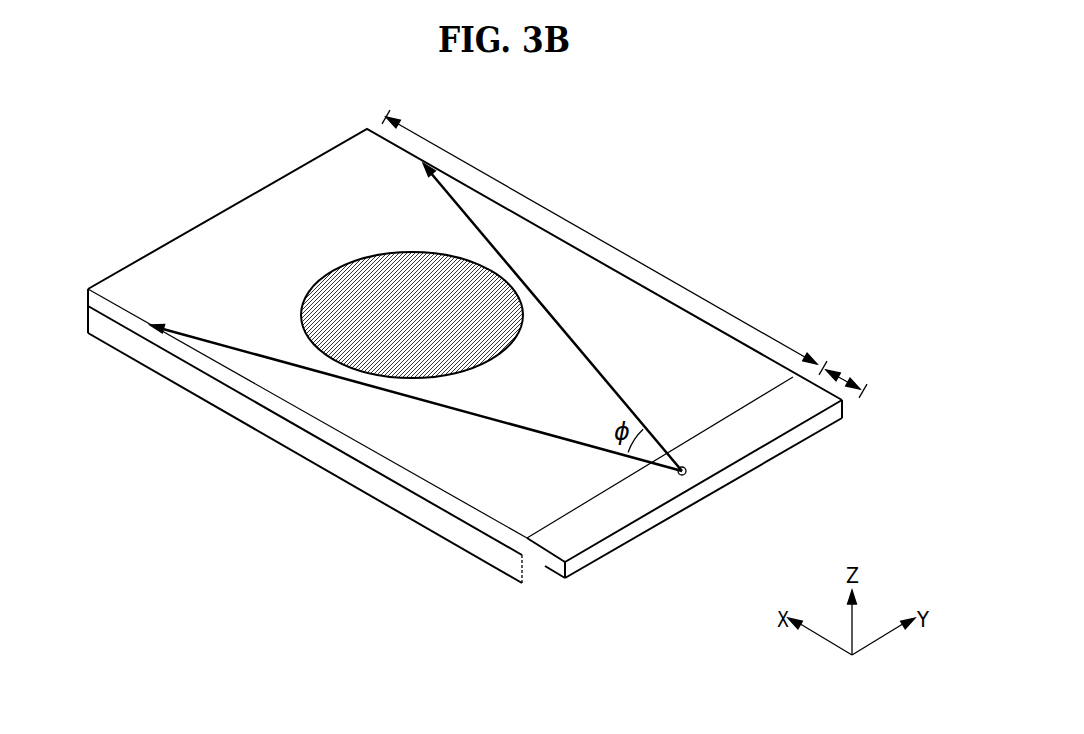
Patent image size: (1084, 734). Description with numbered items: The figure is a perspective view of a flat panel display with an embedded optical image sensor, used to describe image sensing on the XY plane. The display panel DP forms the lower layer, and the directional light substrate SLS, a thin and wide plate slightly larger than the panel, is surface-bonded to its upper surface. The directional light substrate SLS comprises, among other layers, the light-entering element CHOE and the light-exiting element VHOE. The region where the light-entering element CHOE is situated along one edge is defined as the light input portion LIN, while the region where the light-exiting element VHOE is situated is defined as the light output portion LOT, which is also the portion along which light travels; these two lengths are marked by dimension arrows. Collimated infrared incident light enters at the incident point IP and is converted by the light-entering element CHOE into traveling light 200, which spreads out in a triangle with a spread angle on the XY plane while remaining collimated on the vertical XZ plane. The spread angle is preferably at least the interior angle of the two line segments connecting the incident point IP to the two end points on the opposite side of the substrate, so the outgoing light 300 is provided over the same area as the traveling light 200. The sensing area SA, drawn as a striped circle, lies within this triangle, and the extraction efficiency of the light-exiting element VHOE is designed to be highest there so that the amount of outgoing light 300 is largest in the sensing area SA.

The sensing area SA is at (345, 270).
The light output portion LOT is at (604, 242).
The light input portion LIN is at (853, 375).
The display panel DP is at (198, 387).
The directional light substrate SLS is at (280, 407).
The light-exiting element VHOE is at (370, 435).
The light-entering element CHOE is at (587, 532).
The incident point IP is at (685, 475).
The traveling light 200 is at (542, 433).
The outgoing light 300 is at (603, 372).